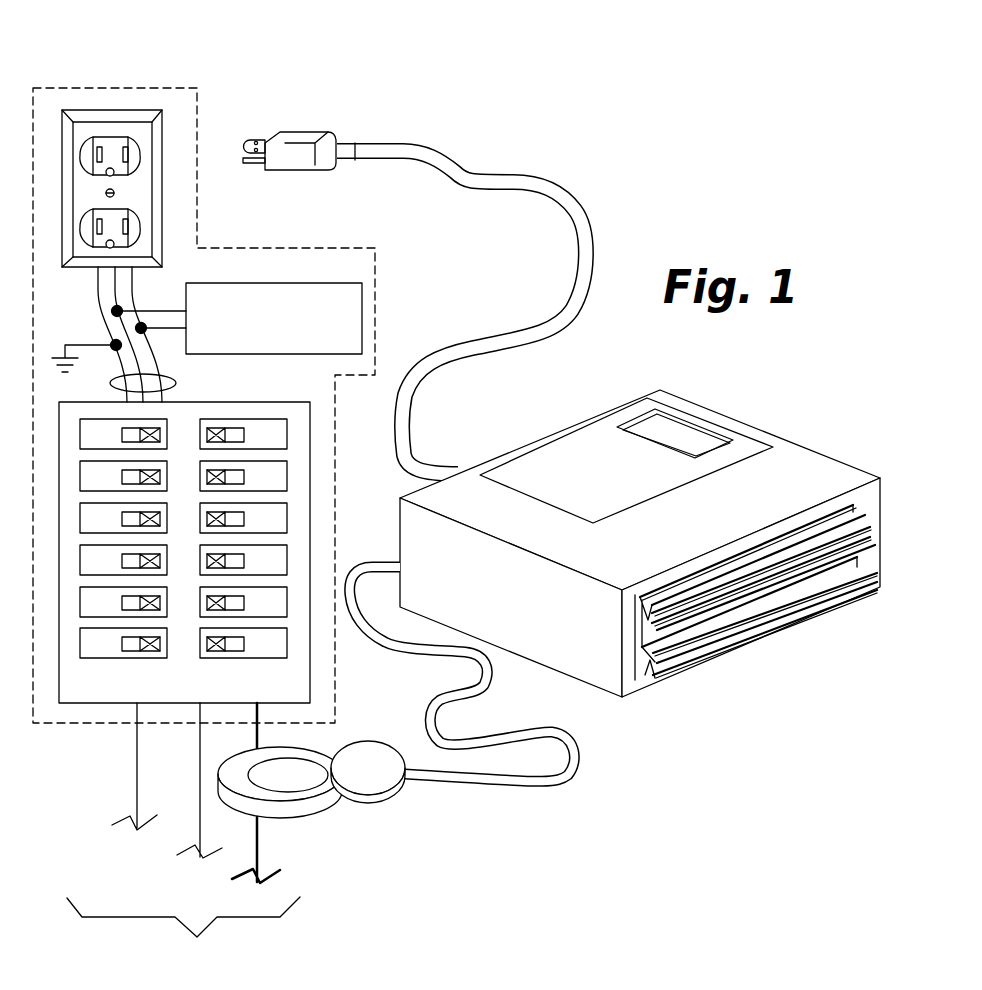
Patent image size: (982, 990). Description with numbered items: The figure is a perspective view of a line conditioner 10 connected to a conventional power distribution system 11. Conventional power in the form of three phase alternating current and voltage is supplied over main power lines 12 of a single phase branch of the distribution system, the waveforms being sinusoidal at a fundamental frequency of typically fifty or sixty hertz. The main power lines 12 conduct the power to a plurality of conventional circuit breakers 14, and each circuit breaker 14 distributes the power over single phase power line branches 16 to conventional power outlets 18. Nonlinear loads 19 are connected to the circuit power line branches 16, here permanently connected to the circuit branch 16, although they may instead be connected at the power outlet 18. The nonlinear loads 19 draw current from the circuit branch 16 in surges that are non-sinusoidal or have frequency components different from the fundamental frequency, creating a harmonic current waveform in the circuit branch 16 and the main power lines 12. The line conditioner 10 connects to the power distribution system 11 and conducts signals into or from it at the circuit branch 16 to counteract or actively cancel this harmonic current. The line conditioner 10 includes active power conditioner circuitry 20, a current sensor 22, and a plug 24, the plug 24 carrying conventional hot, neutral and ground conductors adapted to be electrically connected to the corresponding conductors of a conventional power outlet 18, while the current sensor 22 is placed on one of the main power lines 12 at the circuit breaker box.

The line conditioner 10 is at (570, 375).
The power distribution system 11 is at (128, 88).
The main power lines 12 is at (183, 841).
The circuit breakers 14 is at (237, 408).
The single phase power line branches 16 is at (176, 381).
The power outlets 18 is at (163, 197).
The nonlinear loads 19 is at (263, 287).
The active power conditioner circuitry 20 is at (530, 616).
The current sensor 22 is at (297, 810).
The plug 24 is at (305, 137).